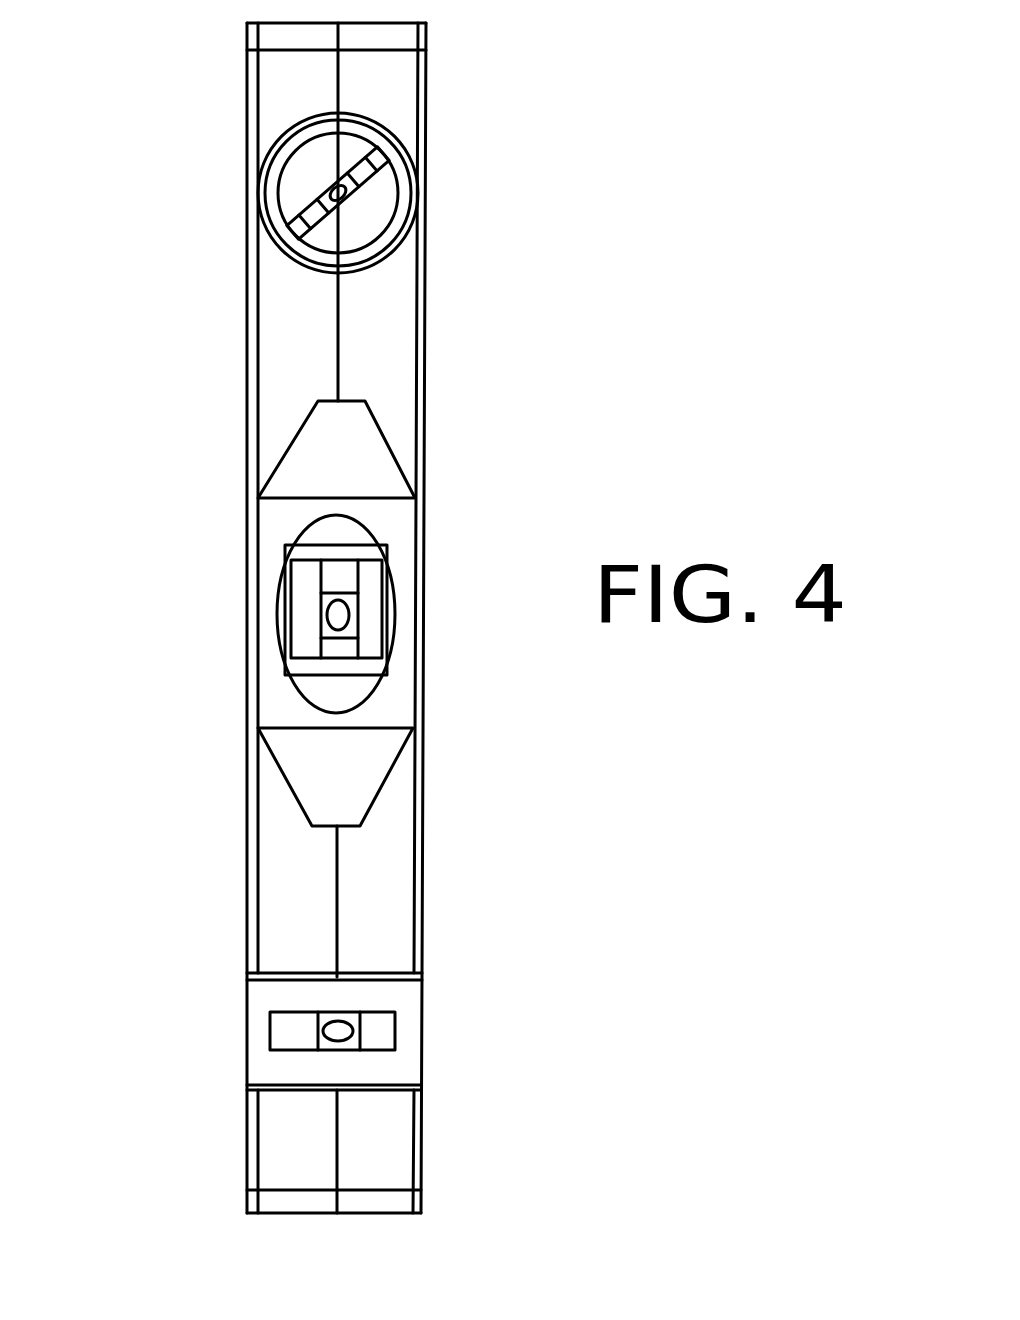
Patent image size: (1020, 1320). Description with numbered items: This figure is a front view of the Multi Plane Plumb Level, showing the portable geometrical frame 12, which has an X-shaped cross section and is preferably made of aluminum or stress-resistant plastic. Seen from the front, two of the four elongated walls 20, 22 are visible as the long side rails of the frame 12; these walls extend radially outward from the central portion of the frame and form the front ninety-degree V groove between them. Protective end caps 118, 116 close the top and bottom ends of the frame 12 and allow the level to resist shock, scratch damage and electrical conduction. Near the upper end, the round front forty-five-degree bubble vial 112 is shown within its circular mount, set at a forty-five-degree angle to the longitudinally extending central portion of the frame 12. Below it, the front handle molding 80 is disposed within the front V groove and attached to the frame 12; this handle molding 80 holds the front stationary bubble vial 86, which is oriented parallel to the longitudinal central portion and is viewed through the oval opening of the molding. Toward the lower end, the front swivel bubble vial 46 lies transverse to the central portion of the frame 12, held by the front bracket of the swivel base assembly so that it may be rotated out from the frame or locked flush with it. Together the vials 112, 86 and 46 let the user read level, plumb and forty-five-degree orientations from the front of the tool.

The frame 12 is at (432, 98).
The protective end cap 118 is at (427, 37).
The protective end cap 116 is at (420, 1200).
The elongated wall 22 is at (283, 317).
The elongated wall 20 is at (403, 318).
The front 45-degree bubble vial 112 is at (373, 162).
The front stationary bubble vial 86 is at (337, 578).
The front handle molding 80 is at (318, 770).
The front swivel bubble vial 46 is at (382, 1032).